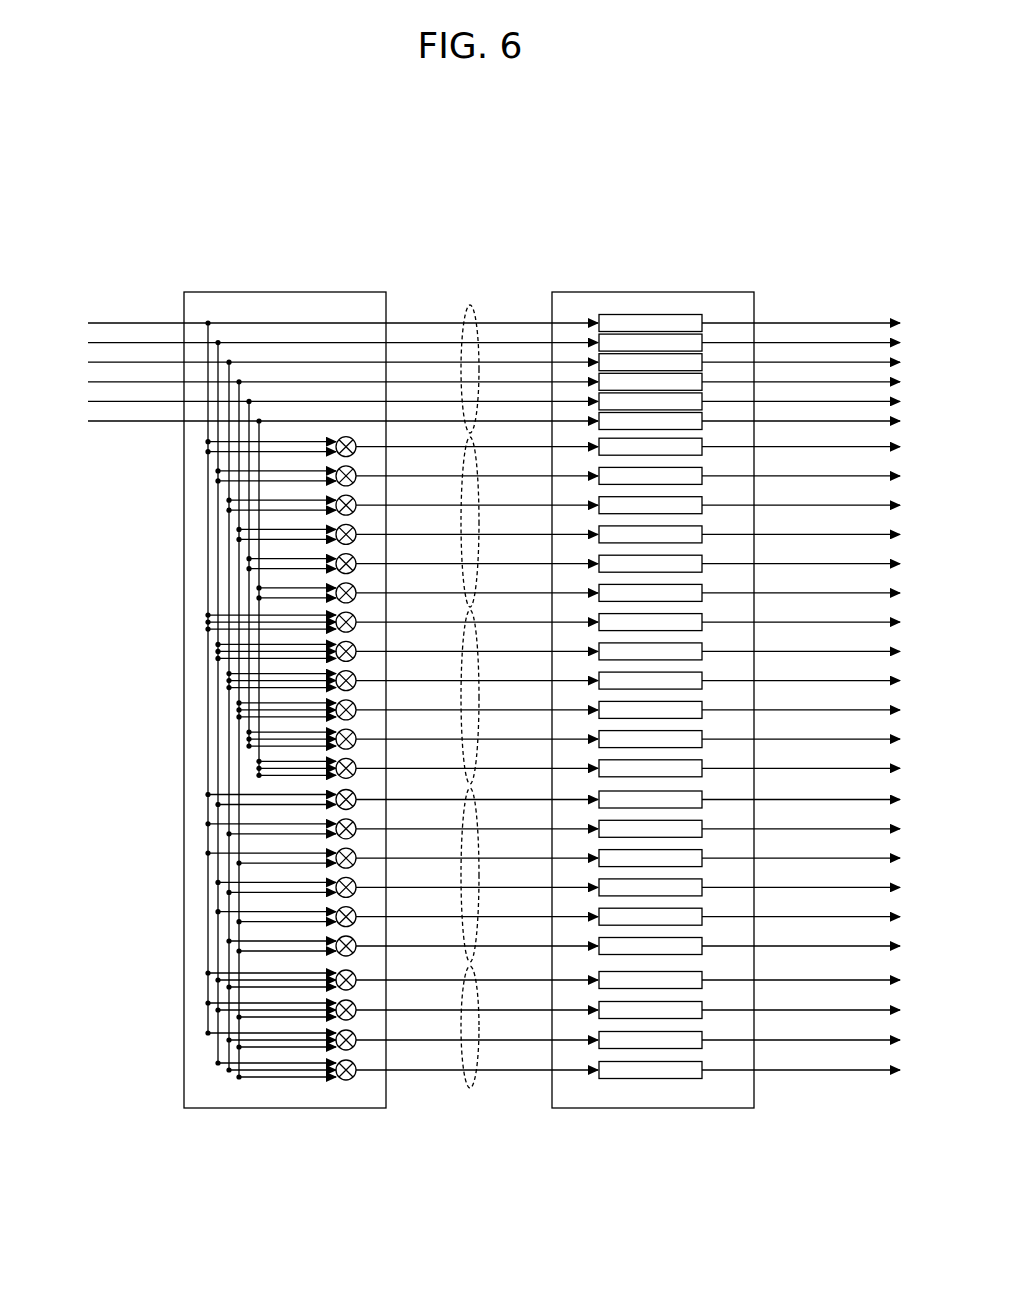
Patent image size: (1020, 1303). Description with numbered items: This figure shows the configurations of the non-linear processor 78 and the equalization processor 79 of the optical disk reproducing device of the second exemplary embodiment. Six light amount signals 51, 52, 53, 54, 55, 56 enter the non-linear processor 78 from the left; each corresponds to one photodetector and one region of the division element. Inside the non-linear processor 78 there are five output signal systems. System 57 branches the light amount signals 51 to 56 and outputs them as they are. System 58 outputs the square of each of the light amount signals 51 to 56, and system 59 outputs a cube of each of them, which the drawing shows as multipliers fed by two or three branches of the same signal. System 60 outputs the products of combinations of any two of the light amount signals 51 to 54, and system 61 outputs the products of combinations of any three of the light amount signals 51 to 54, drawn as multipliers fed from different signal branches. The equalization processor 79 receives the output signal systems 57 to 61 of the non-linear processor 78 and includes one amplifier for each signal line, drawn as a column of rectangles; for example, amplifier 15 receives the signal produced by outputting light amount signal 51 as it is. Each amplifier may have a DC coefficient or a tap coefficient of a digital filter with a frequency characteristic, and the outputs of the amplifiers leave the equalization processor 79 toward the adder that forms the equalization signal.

The amplifier 15 is at (688, 314).
The light amount signal 51 is at (93, 317).
The light amount signal 52 is at (115, 337).
The light amount signal 53 is at (148, 357).
The light amount signal 54 is at (90, 379).
The light amount signal 55 is at (128, 398).
The light amount signal 56 is at (163, 418).
The system 57 is at (470, 305).
The system 58 is at (478, 462).
The system 59 is at (478, 636).
The system 60 is at (478, 846).
The system 61 is at (470, 1088).
The non-linear processor 78 is at (278, 1108).
The equalization processor 79 is at (649, 1108).